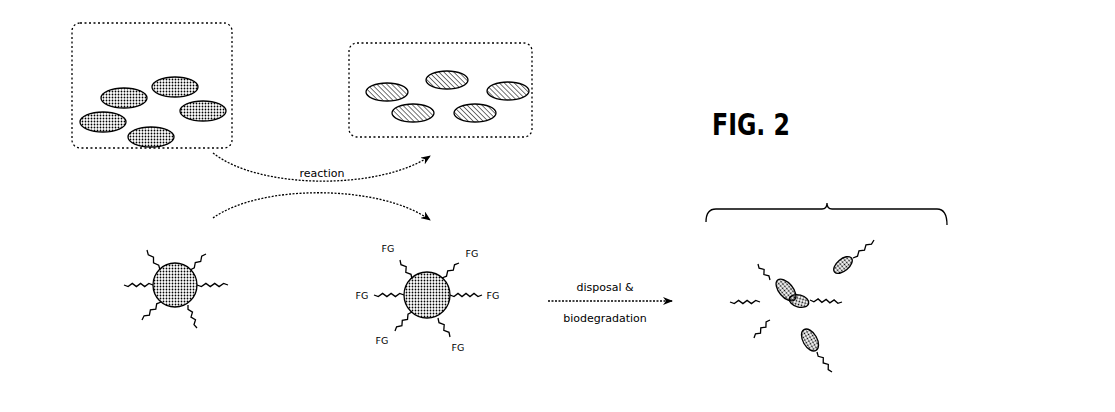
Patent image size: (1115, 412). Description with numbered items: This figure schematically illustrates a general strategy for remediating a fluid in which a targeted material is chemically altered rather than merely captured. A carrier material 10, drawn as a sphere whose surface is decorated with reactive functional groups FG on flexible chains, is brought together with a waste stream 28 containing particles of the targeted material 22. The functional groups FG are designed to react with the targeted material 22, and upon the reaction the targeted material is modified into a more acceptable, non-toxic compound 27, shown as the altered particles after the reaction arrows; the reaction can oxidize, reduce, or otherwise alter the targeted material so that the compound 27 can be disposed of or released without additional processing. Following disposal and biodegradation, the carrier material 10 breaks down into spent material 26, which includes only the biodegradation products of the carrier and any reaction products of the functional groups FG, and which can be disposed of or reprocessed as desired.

The carrier material 10 is at (152, 290).
The targeted material 22 is at (130, 143).
The spent material 26 is at (826, 281).
The non-toxic compound 27 is at (496, 117).
The waste stream 28 is at (102, 72).